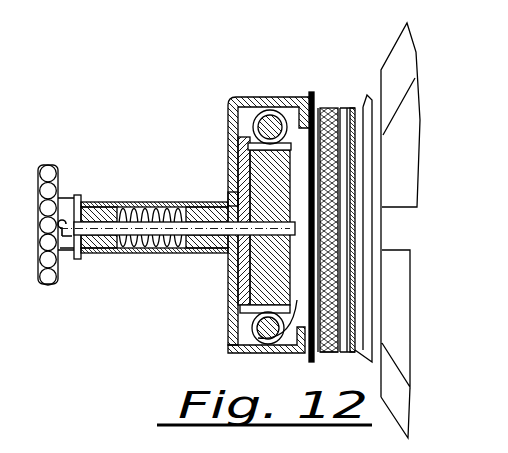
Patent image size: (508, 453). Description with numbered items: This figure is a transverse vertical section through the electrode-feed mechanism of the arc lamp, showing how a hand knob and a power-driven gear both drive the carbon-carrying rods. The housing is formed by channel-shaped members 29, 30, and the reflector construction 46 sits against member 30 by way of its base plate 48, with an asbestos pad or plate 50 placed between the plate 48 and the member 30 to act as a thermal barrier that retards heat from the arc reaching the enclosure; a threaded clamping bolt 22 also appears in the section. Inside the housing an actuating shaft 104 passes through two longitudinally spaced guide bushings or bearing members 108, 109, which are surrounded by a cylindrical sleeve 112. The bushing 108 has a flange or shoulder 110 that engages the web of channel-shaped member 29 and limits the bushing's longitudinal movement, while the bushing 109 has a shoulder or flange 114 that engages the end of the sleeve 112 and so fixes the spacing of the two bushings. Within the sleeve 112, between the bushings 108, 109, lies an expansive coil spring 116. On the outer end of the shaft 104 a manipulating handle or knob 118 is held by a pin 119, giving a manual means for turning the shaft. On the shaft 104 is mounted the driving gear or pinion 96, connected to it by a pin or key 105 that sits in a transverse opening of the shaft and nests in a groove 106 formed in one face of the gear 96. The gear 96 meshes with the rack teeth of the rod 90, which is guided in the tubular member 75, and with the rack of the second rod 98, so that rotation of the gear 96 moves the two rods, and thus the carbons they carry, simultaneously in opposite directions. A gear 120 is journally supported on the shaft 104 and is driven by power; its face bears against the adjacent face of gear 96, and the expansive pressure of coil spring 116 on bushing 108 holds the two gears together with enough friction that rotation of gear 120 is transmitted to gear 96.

The threaded clamping bolt 22 is at (312, 362).
The channel-shaped member 29 is at (230, 132).
The channel-shaped member 30 is at (320, 355).
The reflector construction 46 is at (397, 38).
The base plate 48 is at (342, 108).
The asbestos pad or plate 50 is at (328, 108).
The tubular member 75 is at (259, 354).
The rod 90 is at (258, 338).
The driving gear or pinion 96 is at (268, 345).
The second rod 98 is at (272, 124).
The actuating shaft 104 is at (262, 232).
The pin or key 105 is at (258, 230).
The groove 106 is at (250, 140).
The guide bushing or bearing member 108 is at (212, 248).
The guide bushing or bearing member 109 is at (98, 246).
The flange or shoulder 110 is at (233, 197).
The cylindrical sleeve 112 is at (144, 186).
The shoulder or flange 114 is at (88, 186).
The expansive coil spring 116 is at (142, 250).
The manipulating handle or knob 118 is at (38, 228).
The pin 119 is at (64, 253).
The gear 120 is at (246, 306).